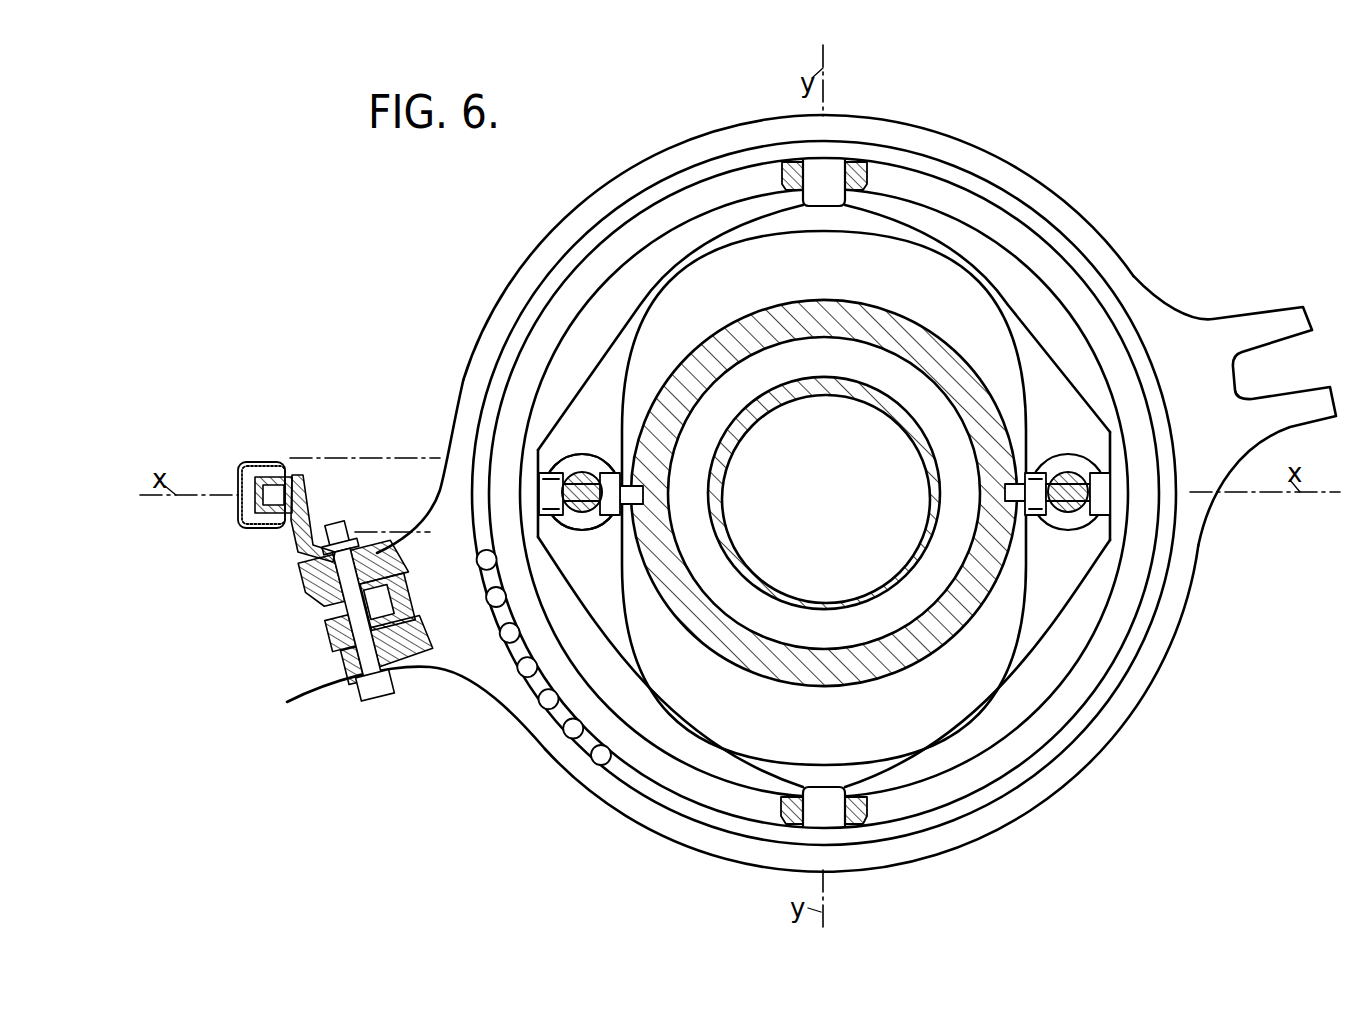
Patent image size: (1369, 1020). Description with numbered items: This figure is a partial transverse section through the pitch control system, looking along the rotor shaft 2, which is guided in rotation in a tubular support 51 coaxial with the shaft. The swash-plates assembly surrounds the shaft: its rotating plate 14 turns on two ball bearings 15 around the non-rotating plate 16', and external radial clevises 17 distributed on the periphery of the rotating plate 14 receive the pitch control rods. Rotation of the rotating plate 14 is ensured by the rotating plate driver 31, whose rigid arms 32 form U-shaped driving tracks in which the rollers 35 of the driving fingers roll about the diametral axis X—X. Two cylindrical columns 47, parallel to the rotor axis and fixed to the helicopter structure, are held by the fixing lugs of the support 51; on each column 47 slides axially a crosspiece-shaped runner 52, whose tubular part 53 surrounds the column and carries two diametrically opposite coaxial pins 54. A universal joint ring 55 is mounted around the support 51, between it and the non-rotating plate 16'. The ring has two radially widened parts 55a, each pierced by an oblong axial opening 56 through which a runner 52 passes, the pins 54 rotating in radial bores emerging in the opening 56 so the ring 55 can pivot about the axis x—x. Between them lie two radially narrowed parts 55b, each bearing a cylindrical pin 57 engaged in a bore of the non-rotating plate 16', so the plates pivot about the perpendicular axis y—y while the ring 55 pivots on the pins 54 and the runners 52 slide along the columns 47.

The rotor shaft 2 is at (728, 448).
The rotating plate 14 is at (463, 643).
The ball bearings 15 is at (605, 758).
The non-rotating plate 16' is at (841, 495).
The external radial clevises 17 is at (1268, 330).
The rotating plate driver 31 is at (373, 446).
The rigid arms 32 is at (280, 462).
The rollers 35 is at (259, 455).
The cylindrical columns 47 is at (545, 488).
The tubular support 51 is at (798, 323).
The runner 52 is at (584, 524).
The tubular part 53 is at (1087, 518).
The cylindrical coaxial pins 54 is at (1005, 492).
The universal joint ring 55 is at (985, 288).
The radially widened parts 55a is at (600, 435).
The radially narrowed parts 55b is at (853, 220).
The axial opening 56 is at (572, 455).
The cylindrical pins 57 is at (823, 180).